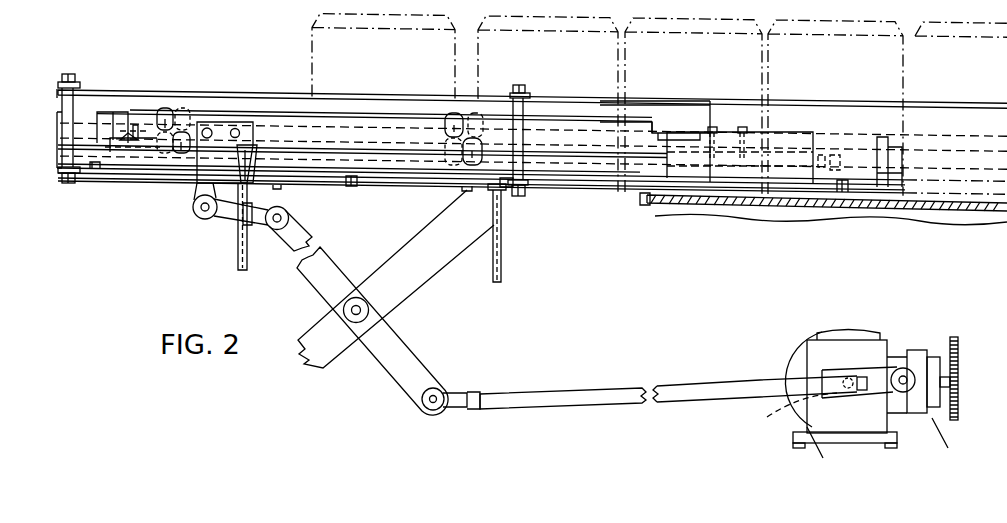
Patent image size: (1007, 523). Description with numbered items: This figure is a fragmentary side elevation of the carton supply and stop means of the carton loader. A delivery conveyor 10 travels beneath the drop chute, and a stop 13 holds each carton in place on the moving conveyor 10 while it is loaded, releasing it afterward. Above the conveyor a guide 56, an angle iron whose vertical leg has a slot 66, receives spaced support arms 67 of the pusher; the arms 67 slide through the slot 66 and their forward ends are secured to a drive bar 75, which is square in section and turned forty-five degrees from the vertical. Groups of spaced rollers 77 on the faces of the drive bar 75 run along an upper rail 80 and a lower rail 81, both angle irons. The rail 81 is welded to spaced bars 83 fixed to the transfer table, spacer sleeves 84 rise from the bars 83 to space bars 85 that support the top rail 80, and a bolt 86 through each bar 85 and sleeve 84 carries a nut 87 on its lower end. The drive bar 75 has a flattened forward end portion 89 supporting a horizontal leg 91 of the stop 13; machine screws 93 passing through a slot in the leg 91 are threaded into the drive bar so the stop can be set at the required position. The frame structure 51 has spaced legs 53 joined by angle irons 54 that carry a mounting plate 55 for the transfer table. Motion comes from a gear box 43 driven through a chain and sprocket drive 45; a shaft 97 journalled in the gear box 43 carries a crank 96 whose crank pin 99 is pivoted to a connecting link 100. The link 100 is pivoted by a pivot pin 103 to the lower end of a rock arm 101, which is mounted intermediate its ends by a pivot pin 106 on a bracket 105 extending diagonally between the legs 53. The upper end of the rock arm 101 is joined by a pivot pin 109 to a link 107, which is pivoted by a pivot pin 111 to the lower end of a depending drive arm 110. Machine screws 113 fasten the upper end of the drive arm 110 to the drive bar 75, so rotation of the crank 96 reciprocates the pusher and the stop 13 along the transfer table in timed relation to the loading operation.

The delivery conveyor 10 is at (656, 206).
The stop 13 is at (790, 131).
The gear box 43 is at (797, 360).
The chain and sprocket drive 45 is at (860, 330).
The frame structure 51 is at (504, 242).
The legs 53 is at (240, 263).
The angle irons 54 is at (282, 192).
The mounting plate 55 is at (350, 193).
The guide 56 is at (57, 138).
The slot 66 is at (137, 153).
The support arms 67 is at (124, 130).
The drive bar 75 is at (638, 122).
The rollers 77 is at (165, 108).
The top rail 80 is at (95, 91).
The lower rail 81 is at (127, 160).
The bars 83 is at (58, 170).
The spacer sleeves 84 is at (60, 112).
The bars 85 is at (72, 82).
The bolt 86 is at (66, 74).
The nut 87 is at (70, 183).
The flattened forward end portion 89 is at (658, 132).
The horizontal leg 91 is at (815, 132).
The screw 93 is at (712, 127).
The crank 96 is at (888, 435).
The shaft 97 is at (806, 409).
The crank pin 99 is at (905, 370).
The connecting link 100 is at (690, 383).
The rock arm 101 is at (407, 343).
The pivot pin 103 is at (444, 392).
The bracket 105 is at (400, 250).
The pivot pin 106 is at (357, 323).
The link 107 is at (215, 197).
The pivot pin 109 is at (278, 230).
The drive arm 110 is at (200, 210).
The pivot pin 111 is at (222, 213).
The machine screws 113 is at (207, 128).